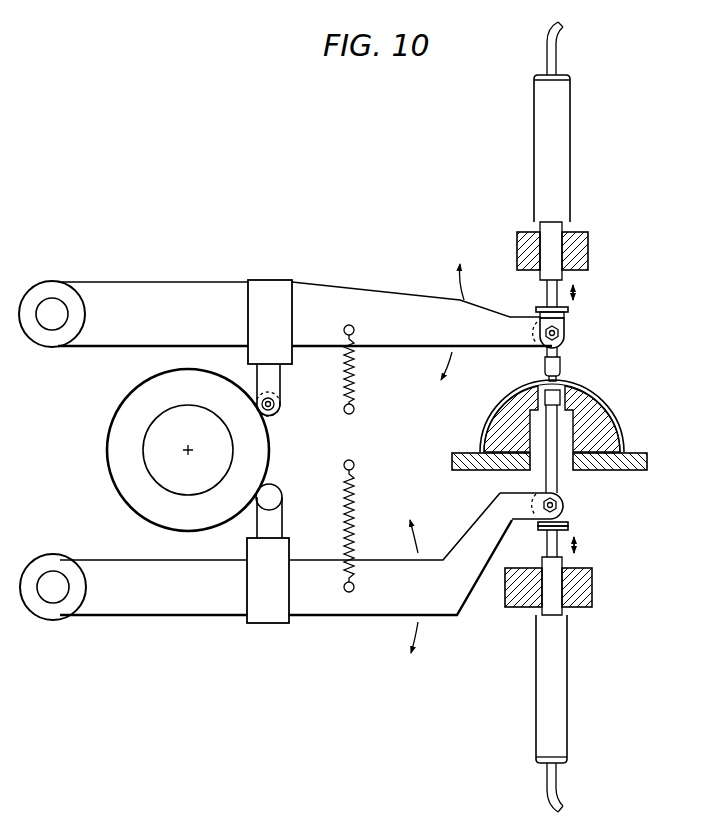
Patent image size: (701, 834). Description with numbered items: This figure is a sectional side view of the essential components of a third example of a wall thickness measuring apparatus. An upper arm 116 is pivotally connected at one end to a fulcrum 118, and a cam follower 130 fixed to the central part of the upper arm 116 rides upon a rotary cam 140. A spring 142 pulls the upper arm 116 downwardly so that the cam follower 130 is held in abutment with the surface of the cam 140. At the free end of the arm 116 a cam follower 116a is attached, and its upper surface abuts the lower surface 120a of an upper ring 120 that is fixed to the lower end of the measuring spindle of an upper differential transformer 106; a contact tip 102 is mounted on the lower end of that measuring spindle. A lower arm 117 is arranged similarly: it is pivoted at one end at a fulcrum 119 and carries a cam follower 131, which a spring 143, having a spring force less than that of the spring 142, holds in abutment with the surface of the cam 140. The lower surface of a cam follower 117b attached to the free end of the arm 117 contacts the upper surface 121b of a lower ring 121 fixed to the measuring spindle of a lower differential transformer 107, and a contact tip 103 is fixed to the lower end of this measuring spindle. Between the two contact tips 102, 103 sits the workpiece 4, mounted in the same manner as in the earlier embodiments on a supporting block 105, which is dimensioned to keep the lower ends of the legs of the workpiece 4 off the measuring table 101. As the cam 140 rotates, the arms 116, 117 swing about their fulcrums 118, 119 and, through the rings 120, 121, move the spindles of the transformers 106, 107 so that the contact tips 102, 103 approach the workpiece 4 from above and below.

The workpiece 4 is at (598, 399).
The base plate 101 is at (457, 452).
The contact tip 102 is at (561, 364).
The contact tip 103 is at (553, 402).
The supporting block 105 is at (603, 433).
The upper differential transformer 106 is at (560, 157).
The lower differential transformer 107 is at (559, 693).
The upper arm 116 is at (200, 300).
The cam follower 116a is at (541, 319).
The lower arm 117 is at (188, 600).
The cam follower 117b is at (530, 521).
The fulcrum 118 is at (50, 307).
The fulcrum 119 is at (53, 592).
The upper ring 120 is at (569, 310).
The lower surface of upper ring 120a is at (565, 316).
The lower ring 121 is at (569, 528).
The upper surface of lower ring 121b is at (553, 521).
The cam follower 130 is at (281, 412).
The cam follower 131 is at (280, 486).
The rotary cam 140 is at (115, 454).
The spring 142 is at (352, 371).
The spring 143 is at (352, 518).